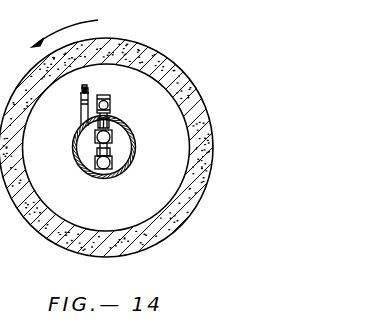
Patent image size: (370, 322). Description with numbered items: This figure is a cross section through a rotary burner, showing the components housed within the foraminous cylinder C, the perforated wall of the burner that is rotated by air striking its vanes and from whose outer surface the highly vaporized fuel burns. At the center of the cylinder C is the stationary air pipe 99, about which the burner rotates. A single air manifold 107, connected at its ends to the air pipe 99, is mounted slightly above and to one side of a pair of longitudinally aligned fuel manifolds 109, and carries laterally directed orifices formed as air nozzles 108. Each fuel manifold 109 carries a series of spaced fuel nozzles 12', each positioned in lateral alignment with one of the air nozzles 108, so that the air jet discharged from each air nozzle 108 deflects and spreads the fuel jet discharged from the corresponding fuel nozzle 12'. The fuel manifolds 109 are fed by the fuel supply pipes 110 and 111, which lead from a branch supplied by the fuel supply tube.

The foraminous cylinder C is at (197, 91).
The air pipe 99 is at (117, 173).
The air manifold 107 is at (80, 100).
The air nozzle 108 is at (90, 88).
The fuel nozzle 12' is at (121, 96).
The fuel manifold 109 is at (112, 106).
The fuel supply pipe 110 is at (111, 137).
The fuel supply pipe 111 is at (113, 160).